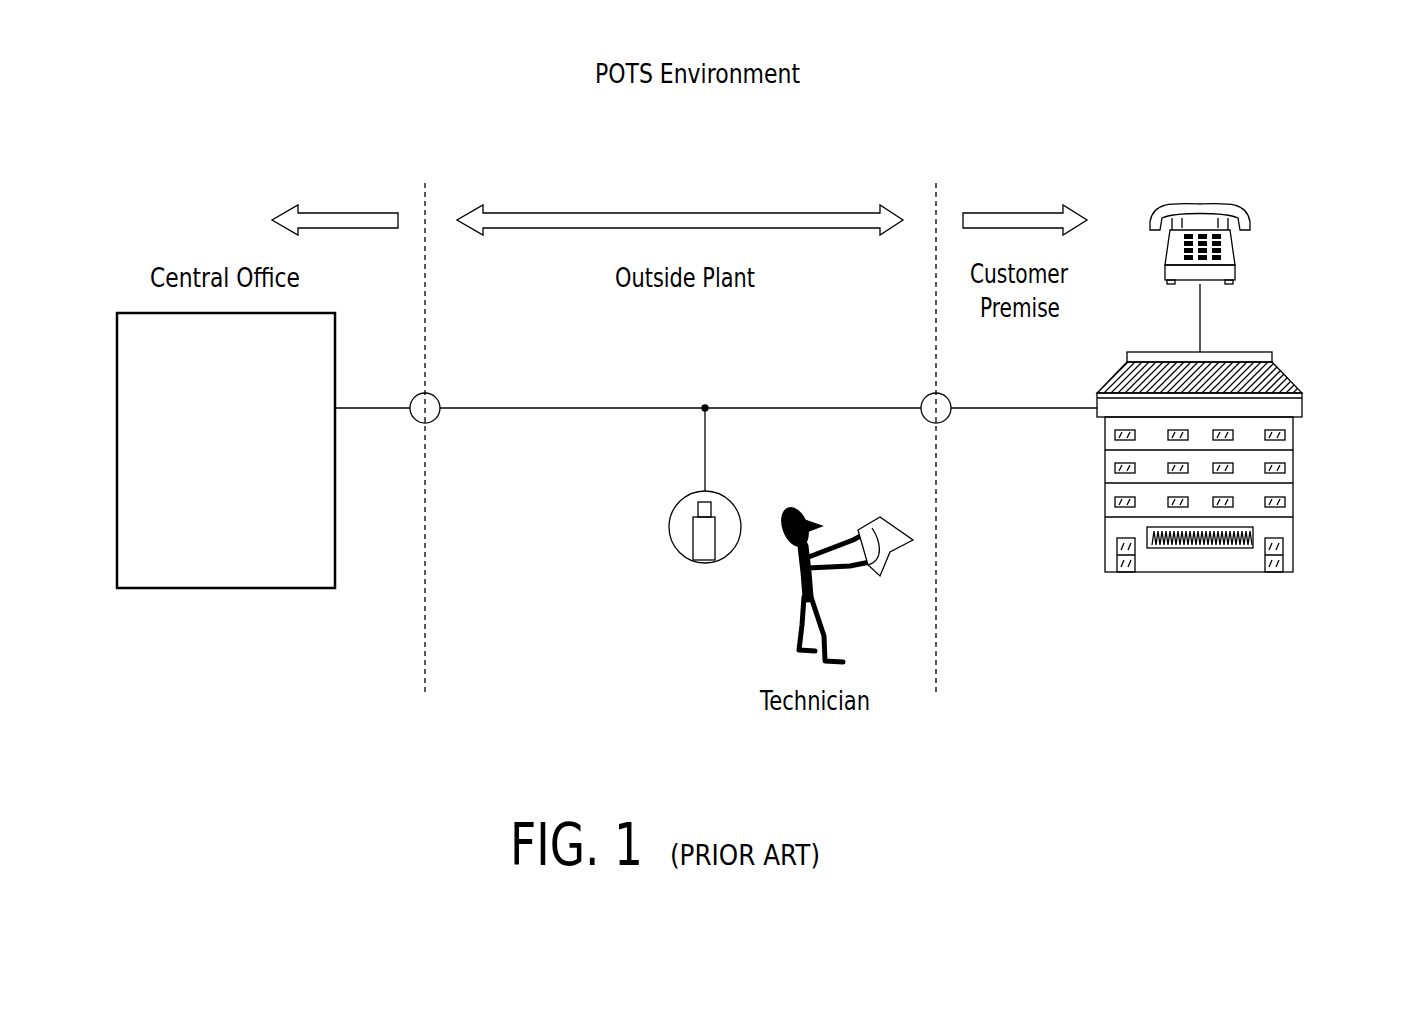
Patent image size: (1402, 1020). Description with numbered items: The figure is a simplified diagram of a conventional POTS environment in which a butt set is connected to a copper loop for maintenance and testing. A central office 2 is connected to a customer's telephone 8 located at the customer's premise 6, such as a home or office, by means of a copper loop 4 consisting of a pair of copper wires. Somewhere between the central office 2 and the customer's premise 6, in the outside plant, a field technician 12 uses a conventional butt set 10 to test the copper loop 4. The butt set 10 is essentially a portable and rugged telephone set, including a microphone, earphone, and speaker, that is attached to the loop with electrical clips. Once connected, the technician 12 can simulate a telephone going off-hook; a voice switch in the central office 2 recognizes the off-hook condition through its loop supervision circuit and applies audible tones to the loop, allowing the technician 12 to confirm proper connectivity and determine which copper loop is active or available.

The central office 2 is at (227, 589).
The copper loop 4 is at (465, 410).
The customer's premise 6 is at (1285, 362).
The customer's telephone 8 is at (1200, 203).
The butt set 10 is at (681, 500).
The field technician 12 is at (850, 537).